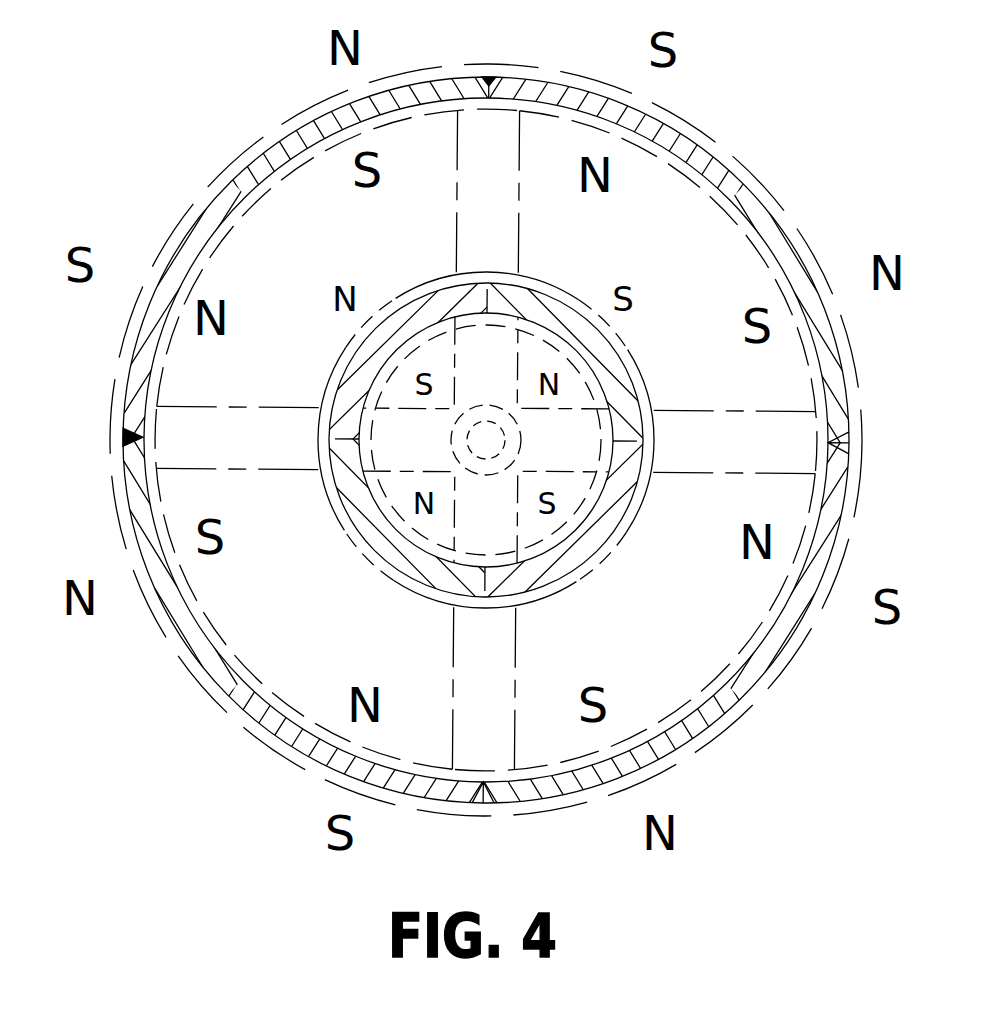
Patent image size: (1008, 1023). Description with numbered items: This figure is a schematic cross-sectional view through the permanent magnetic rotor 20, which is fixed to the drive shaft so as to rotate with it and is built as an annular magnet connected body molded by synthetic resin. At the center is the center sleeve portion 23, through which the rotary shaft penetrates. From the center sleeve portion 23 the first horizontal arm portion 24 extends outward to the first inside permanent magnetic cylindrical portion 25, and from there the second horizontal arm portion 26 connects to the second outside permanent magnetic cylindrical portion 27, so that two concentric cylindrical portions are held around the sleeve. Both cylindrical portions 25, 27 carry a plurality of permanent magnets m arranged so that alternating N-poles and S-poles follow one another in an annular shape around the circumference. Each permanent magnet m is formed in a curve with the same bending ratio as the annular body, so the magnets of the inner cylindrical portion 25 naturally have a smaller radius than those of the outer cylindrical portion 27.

The permanent magnetic rotor 20 is at (767, 147).
The permanent magnets m is at (322, 126).
The second outside permanent magnetic cylindrical portion 27 is at (771, 689).
The second horizontal arm portion 26 is at (519, 247).
The first inside permanent magnetic cylindrical portion 25 is at (592, 282).
The first horizontal arm portion 24 is at (435, 330).
The center sleeve portion 23 is at (450, 452).